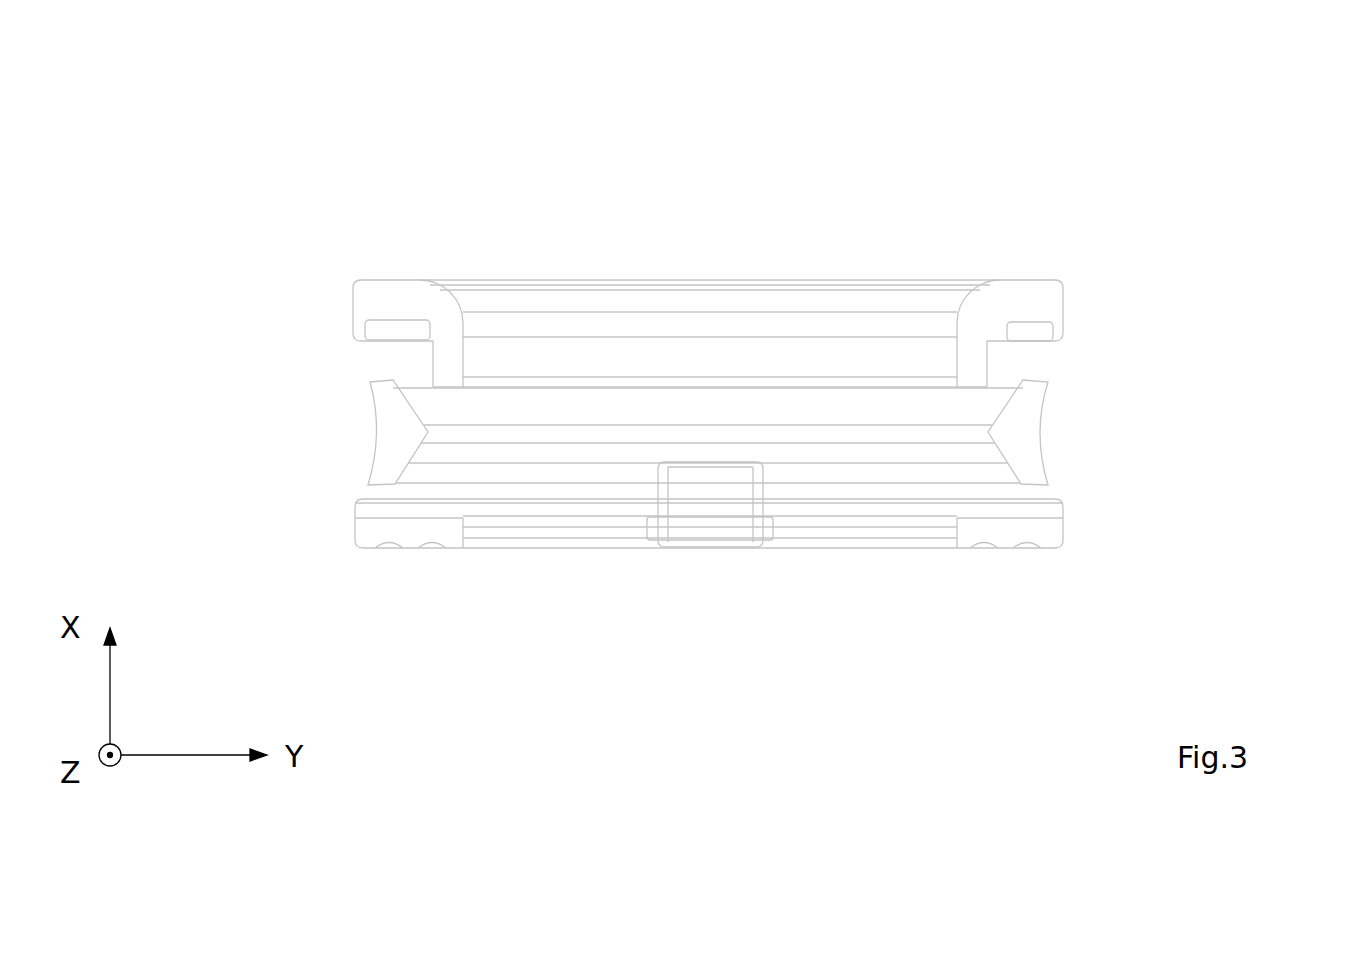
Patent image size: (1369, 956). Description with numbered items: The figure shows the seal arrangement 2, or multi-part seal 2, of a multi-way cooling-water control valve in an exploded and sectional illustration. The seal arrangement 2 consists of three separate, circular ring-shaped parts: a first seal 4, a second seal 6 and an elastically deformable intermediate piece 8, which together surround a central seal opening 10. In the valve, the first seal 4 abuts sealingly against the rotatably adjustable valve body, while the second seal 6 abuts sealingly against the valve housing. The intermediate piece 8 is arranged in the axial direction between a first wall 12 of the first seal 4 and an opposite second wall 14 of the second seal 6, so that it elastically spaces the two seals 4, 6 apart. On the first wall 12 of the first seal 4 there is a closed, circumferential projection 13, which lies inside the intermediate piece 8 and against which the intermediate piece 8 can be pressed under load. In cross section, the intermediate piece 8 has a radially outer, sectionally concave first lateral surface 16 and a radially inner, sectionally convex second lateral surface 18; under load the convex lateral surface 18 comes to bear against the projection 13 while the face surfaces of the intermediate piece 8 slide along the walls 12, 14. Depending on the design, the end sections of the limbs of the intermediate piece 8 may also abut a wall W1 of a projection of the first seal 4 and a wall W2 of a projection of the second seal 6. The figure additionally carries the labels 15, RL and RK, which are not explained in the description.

The seal arrangement 2 is at (296, 168).
The seal opening 10 is at (737, 245).
The first seal 4 is at (767, 300).
The second seal 6 is at (784, 529).
The intermediate piece 8 is at (1020, 430).
The first wall 12 is at (395, 322).
The projection 13 is at (447, 357).
The second wall 14 is at (397, 518).
The wall 15 is at (508, 530).
The first lateral surface 16 is at (1062, 435).
The second lateral surface 18 is at (978, 432).
The latching edge RL is at (724, 385).
The latching notch RK is at (713, 502).
The wall of projection of first seal W1 is at (1050, 335).
The wall of projection of second seal W2 is at (1050, 507).